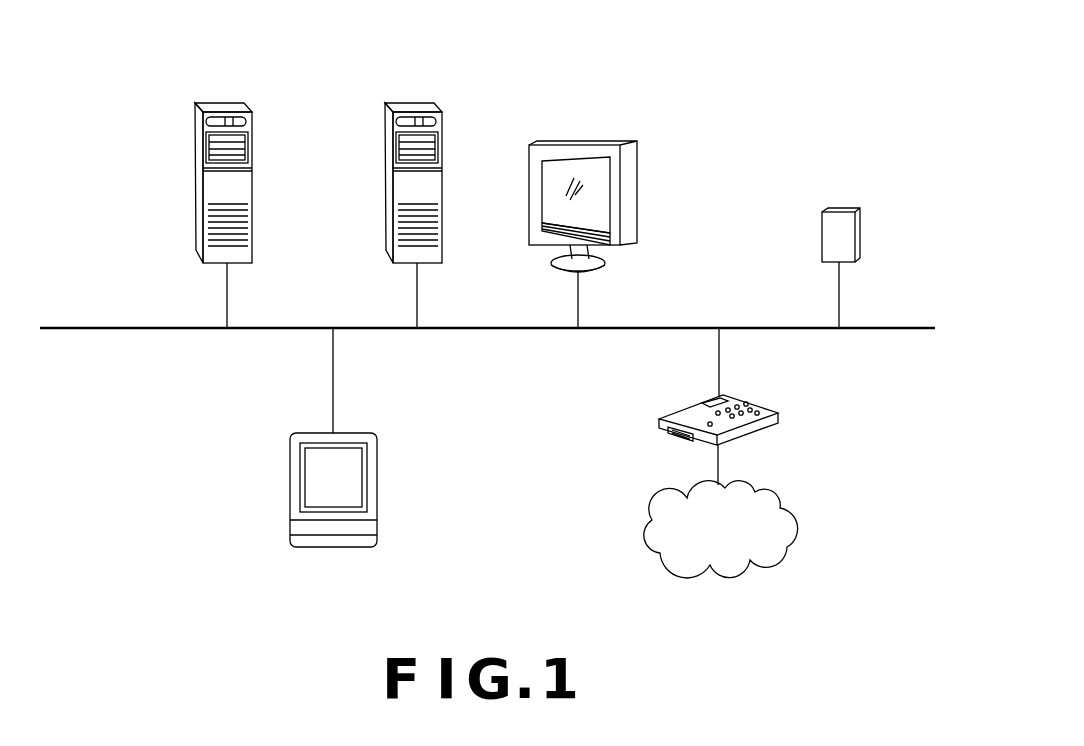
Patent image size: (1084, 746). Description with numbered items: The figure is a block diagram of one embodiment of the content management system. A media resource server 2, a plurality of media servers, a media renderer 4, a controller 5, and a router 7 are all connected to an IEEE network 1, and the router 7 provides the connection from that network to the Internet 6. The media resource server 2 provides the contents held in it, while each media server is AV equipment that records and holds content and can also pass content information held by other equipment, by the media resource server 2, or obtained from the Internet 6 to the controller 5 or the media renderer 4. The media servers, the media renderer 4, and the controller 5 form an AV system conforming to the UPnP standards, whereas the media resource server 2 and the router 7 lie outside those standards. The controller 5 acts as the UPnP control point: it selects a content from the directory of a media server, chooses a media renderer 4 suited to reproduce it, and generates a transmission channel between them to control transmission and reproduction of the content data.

The IEEE network 1 is at (493, 333).
The media resource server 2 is at (308, 487).
The media renderer 4 is at (574, 168).
The controller 5 is at (836, 222).
The Internet 6 is at (768, 508).
The router 7 is at (755, 405).